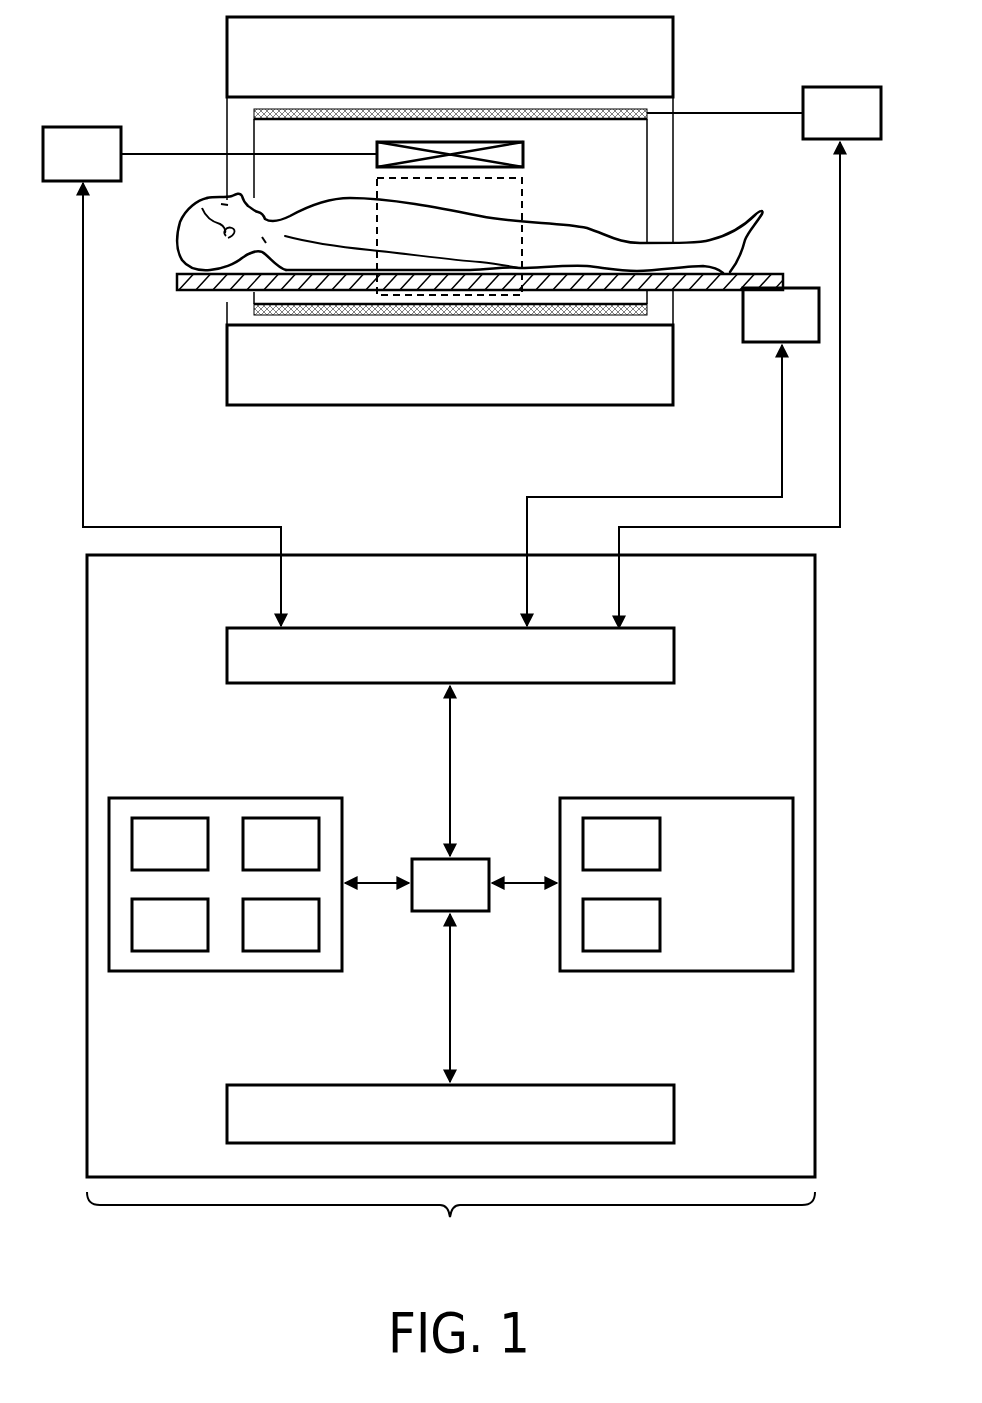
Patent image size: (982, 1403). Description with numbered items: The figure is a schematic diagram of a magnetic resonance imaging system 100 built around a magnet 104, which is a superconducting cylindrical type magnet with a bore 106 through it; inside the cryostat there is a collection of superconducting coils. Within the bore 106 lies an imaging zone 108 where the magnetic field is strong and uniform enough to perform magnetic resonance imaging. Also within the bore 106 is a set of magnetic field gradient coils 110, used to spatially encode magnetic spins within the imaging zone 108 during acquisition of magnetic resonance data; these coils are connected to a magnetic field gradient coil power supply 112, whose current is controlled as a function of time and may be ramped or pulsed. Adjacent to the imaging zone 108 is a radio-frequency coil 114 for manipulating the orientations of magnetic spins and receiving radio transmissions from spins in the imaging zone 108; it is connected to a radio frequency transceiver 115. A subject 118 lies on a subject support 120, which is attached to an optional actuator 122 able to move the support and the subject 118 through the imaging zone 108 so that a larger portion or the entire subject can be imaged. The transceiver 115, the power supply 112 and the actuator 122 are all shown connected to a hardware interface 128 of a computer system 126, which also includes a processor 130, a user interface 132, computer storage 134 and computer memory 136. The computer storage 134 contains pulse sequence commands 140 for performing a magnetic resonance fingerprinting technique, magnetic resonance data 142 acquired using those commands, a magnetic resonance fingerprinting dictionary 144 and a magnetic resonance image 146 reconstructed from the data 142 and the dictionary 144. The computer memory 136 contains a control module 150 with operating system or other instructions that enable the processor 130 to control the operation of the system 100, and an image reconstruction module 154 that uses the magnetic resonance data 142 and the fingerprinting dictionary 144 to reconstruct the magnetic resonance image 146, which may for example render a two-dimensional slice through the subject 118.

The magnetic resonance imaging system 100 is at (451, 1223).
The magnet 104 is at (245, 50).
The bore of magnet 106 is at (658, 189).
The imaging zone 108 is at (522, 184).
The magnetic field gradient coils 110 is at (254, 113).
The magnetic field gradient coil power supply 112 is at (821, 127).
The radio-frequency coil 114 is at (523, 154).
The transceiver 115 is at (104, 167).
The subject 118 is at (183, 234).
The subject support 120 is at (177, 283).
The actuator 122 is at (760, 329).
The computer system 126 is at (389, 555).
The hardware interface 128 is at (429, 669).
The processor 130 is at (429, 899).
The user interface 132 is at (429, 1127).
The computer storage 134 is at (158, 798).
The computer memory 136 is at (609, 798).
The pulse sequence commands 140 is at (149, 858).
The magnetic resonance data 142 is at (260, 858).
The magnetic resonance fingerprinting dictionary 144 is at (149, 939).
The magnetic resonance image 146 is at (260, 939).
The control module 150 is at (601, 858).
The image reconstruction module 154 is at (601, 939).